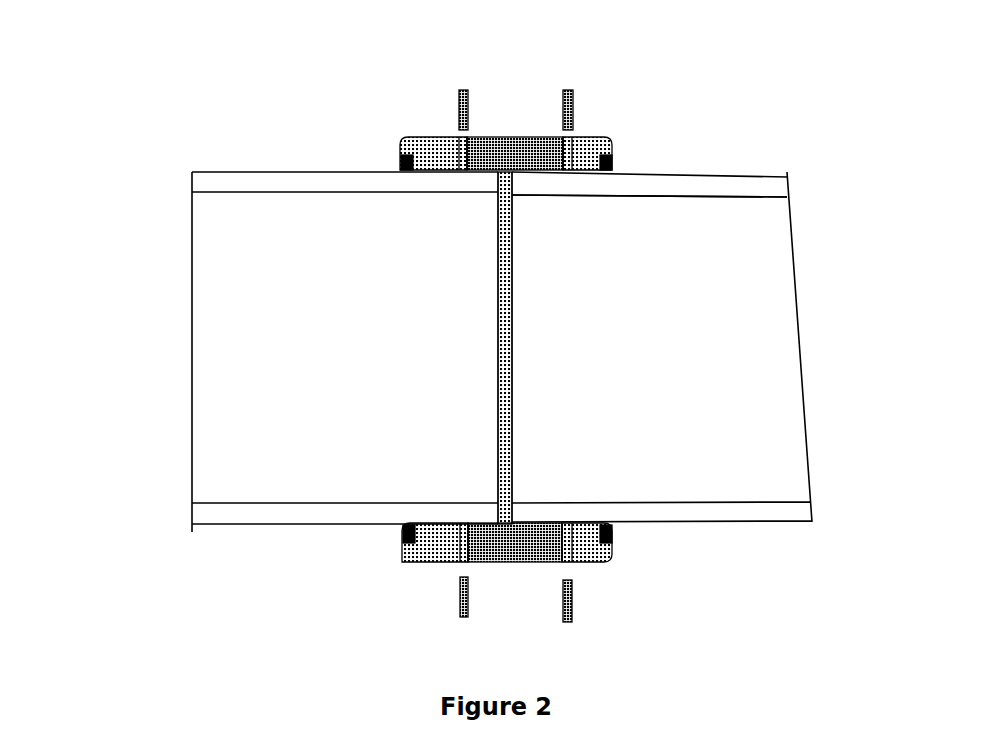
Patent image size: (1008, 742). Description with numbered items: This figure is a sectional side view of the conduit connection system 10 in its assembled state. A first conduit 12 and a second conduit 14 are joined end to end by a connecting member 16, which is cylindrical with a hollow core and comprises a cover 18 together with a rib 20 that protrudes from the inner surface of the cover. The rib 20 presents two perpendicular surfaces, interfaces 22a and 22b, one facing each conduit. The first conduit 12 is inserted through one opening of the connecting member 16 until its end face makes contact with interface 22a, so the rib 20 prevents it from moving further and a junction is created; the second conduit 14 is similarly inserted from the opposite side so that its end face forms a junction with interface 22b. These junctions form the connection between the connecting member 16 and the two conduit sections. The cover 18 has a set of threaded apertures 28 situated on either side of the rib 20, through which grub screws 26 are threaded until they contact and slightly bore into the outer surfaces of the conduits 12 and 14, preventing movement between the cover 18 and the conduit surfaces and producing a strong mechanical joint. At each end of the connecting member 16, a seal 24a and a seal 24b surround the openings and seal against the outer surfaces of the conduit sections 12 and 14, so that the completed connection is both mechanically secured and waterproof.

The conduit connection system 10 is at (460, 344).
The first conduit 12 is at (222, 183).
The second conduit 14 is at (632, 187).
The connecting member 16 is at (560, 213).
The cover 18 is at (533, 150).
The rib 20 is at (485, 348).
The interface 22a is at (498, 389).
The interface 22b is at (513, 367).
The seal 24a is at (410, 167).
The seal 24b is at (610, 157).
The grub screw 26 is at (458, 102).
The aperture 28 is at (442, 137).